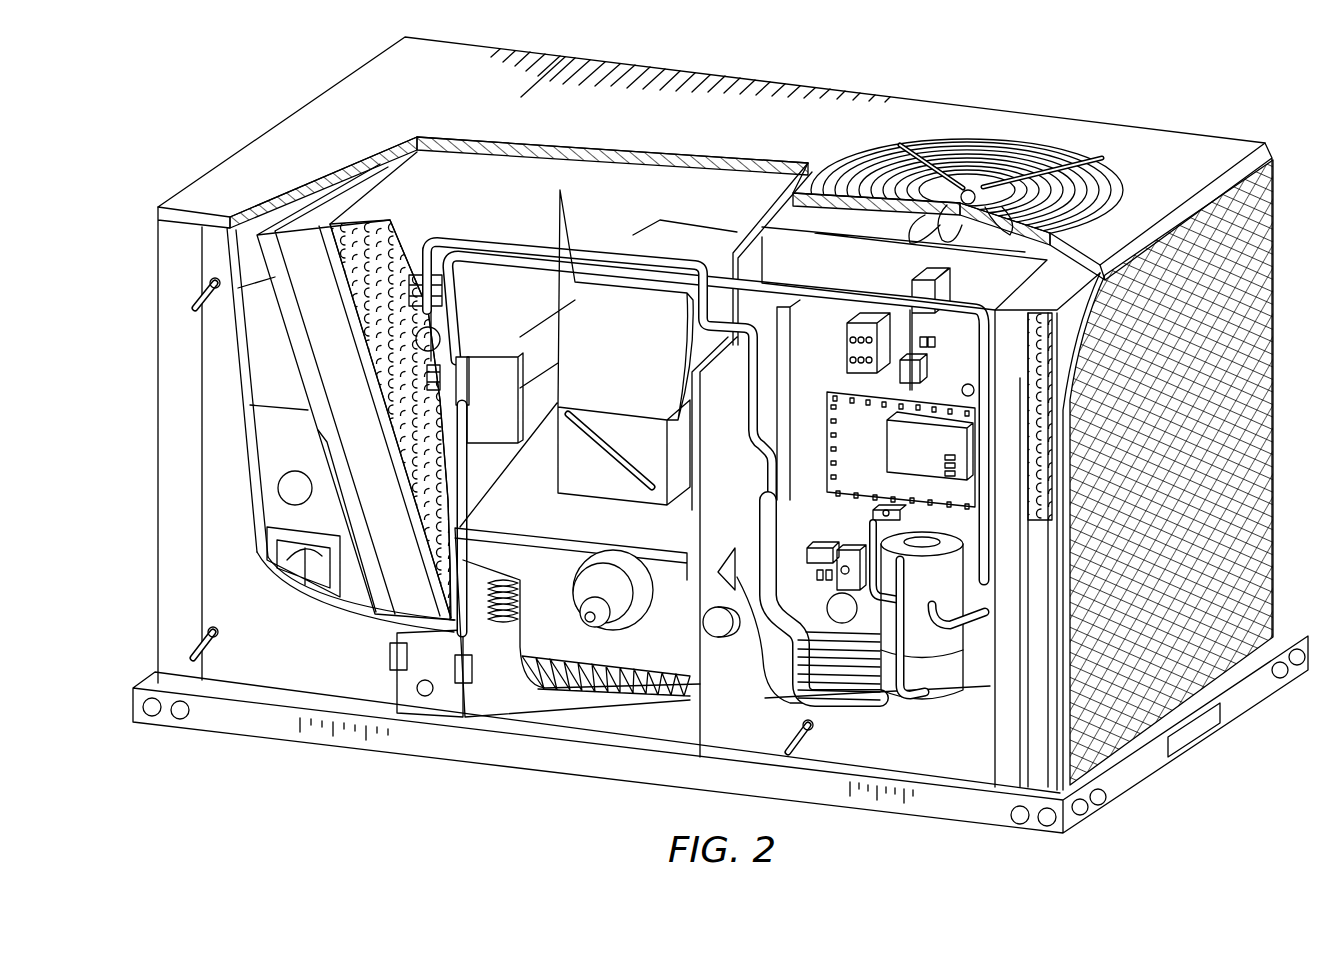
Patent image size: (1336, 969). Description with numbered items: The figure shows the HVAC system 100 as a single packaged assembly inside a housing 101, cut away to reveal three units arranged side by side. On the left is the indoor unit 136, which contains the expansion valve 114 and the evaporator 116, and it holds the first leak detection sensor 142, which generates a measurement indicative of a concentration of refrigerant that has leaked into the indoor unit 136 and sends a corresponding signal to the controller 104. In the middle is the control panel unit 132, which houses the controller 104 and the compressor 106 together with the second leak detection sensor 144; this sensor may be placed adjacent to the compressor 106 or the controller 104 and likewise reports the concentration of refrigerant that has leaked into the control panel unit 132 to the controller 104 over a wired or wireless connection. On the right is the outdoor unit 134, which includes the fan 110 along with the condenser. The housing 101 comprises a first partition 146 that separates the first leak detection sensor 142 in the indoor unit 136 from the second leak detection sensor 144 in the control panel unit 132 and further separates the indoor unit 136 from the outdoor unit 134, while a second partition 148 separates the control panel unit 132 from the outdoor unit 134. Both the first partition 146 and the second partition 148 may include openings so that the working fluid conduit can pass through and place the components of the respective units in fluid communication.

The HVAC system 100 is at (308, 40).
The housing 101 is at (227, 170).
The controller 104 is at (937, 462).
The compressor 106 is at (948, 605).
The fan 110 is at (952, 167).
The expansion valve 114 is at (436, 328).
The evaporator 116 is at (390, 190).
The control panel unit 132 is at (786, 700).
The outdoor unit 134 is at (1178, 154).
The indoor unit 136 is at (244, 344).
The first leak detection sensor 142 is at (274, 491).
The second leak detection sensor 144 is at (797, 618).
The first partition 146 is at (822, 206).
The second partition 148 is at (1001, 293).